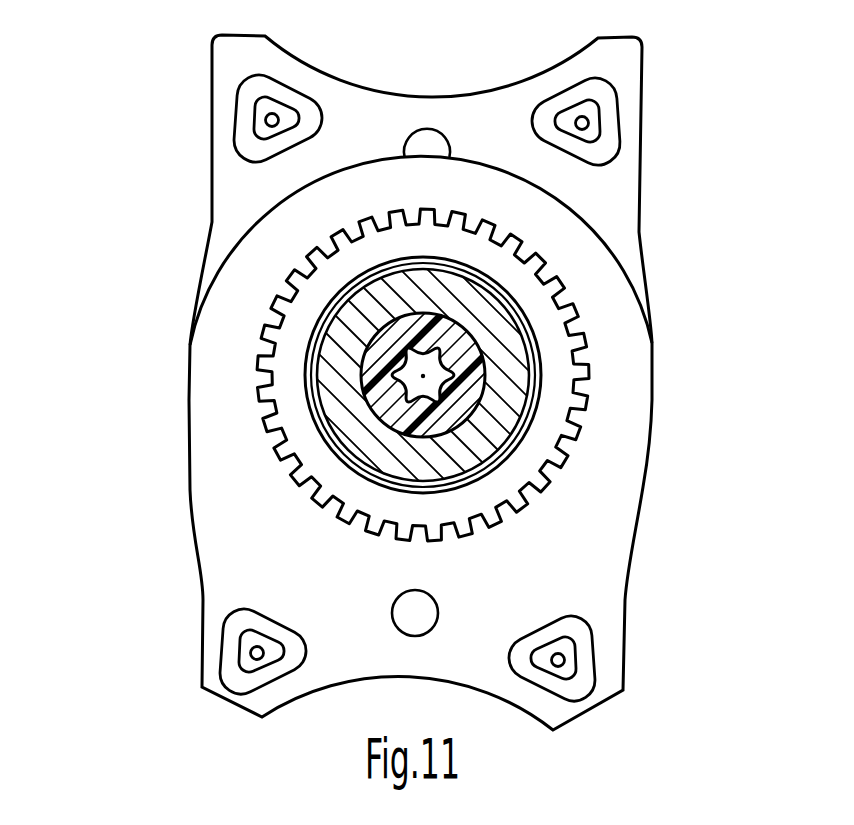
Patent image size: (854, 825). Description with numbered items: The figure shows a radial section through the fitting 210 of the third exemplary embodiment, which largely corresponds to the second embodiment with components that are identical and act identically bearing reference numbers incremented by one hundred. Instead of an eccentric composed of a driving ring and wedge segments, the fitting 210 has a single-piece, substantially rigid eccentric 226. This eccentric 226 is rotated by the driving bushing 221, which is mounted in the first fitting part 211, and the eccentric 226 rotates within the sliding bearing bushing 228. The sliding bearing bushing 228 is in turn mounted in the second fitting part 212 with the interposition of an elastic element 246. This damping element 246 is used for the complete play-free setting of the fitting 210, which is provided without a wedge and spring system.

The fitting 210 is at (184, 123).
The first fitting part 211 is at (240, 190).
The second fitting part 212 is at (217, 440).
The elastic element 246 is at (443, 266).
The sliding bearing bushing 228 is at (470, 284).
The eccentric 226 is at (495, 347).
The driving bushing 221 is at (442, 407).